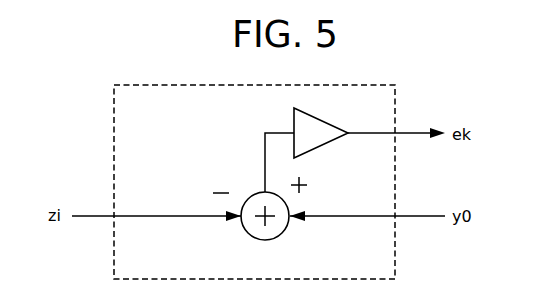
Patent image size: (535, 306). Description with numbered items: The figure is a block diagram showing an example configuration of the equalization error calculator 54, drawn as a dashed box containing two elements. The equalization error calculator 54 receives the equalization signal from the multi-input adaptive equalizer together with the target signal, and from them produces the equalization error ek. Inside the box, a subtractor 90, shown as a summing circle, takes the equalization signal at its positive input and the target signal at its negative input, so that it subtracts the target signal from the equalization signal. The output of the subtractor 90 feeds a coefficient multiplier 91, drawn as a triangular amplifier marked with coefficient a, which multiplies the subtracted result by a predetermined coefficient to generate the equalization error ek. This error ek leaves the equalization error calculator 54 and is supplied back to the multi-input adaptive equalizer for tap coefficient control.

The equalization error calculator 54 is at (397, 255).
The subtractor 90 is at (281, 234).
The coefficient multiplier 91 is at (322, 147).